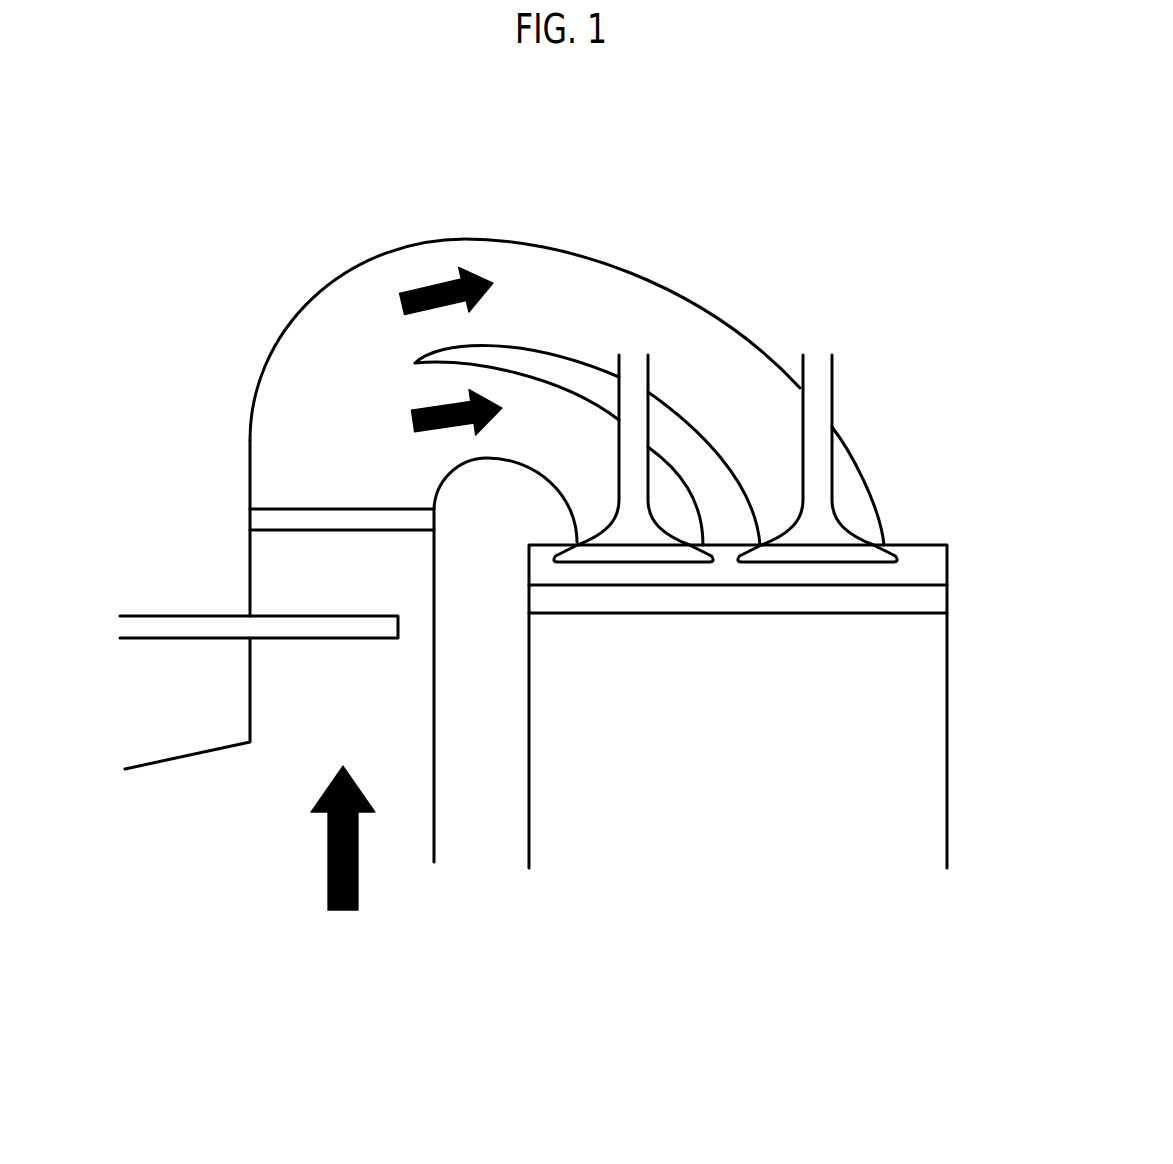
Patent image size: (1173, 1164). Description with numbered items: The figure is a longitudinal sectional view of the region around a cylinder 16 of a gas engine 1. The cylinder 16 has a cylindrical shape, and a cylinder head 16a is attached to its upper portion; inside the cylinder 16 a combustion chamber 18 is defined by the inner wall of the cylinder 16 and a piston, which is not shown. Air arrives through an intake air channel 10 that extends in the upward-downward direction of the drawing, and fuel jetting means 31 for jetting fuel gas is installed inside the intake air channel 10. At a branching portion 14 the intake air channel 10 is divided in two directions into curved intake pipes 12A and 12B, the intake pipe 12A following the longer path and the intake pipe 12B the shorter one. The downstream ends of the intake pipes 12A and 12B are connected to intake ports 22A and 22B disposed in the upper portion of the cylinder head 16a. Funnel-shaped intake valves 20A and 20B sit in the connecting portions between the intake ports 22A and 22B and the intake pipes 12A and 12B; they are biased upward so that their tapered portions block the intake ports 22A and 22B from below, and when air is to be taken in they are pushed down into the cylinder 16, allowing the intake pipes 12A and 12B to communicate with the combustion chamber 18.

The gas engine 1 is at (598, 163).
The intake air channel 10 is at (250, 521).
The intake pipe 12A is at (697, 290).
The intake pipe 12B is at (500, 460).
The branching portion 14 is at (348, 310).
The cylinder 16 is at (948, 720).
The cylinder head 16a is at (948, 572).
The combustion chamber 18 is at (695, 737).
The intake valve 20A is at (834, 368).
The intake valve 20B is at (650, 372).
The intake port 22A is at (768, 542).
The intake port 22B is at (580, 542).
The fuel jetting means 31 is at (309, 676).